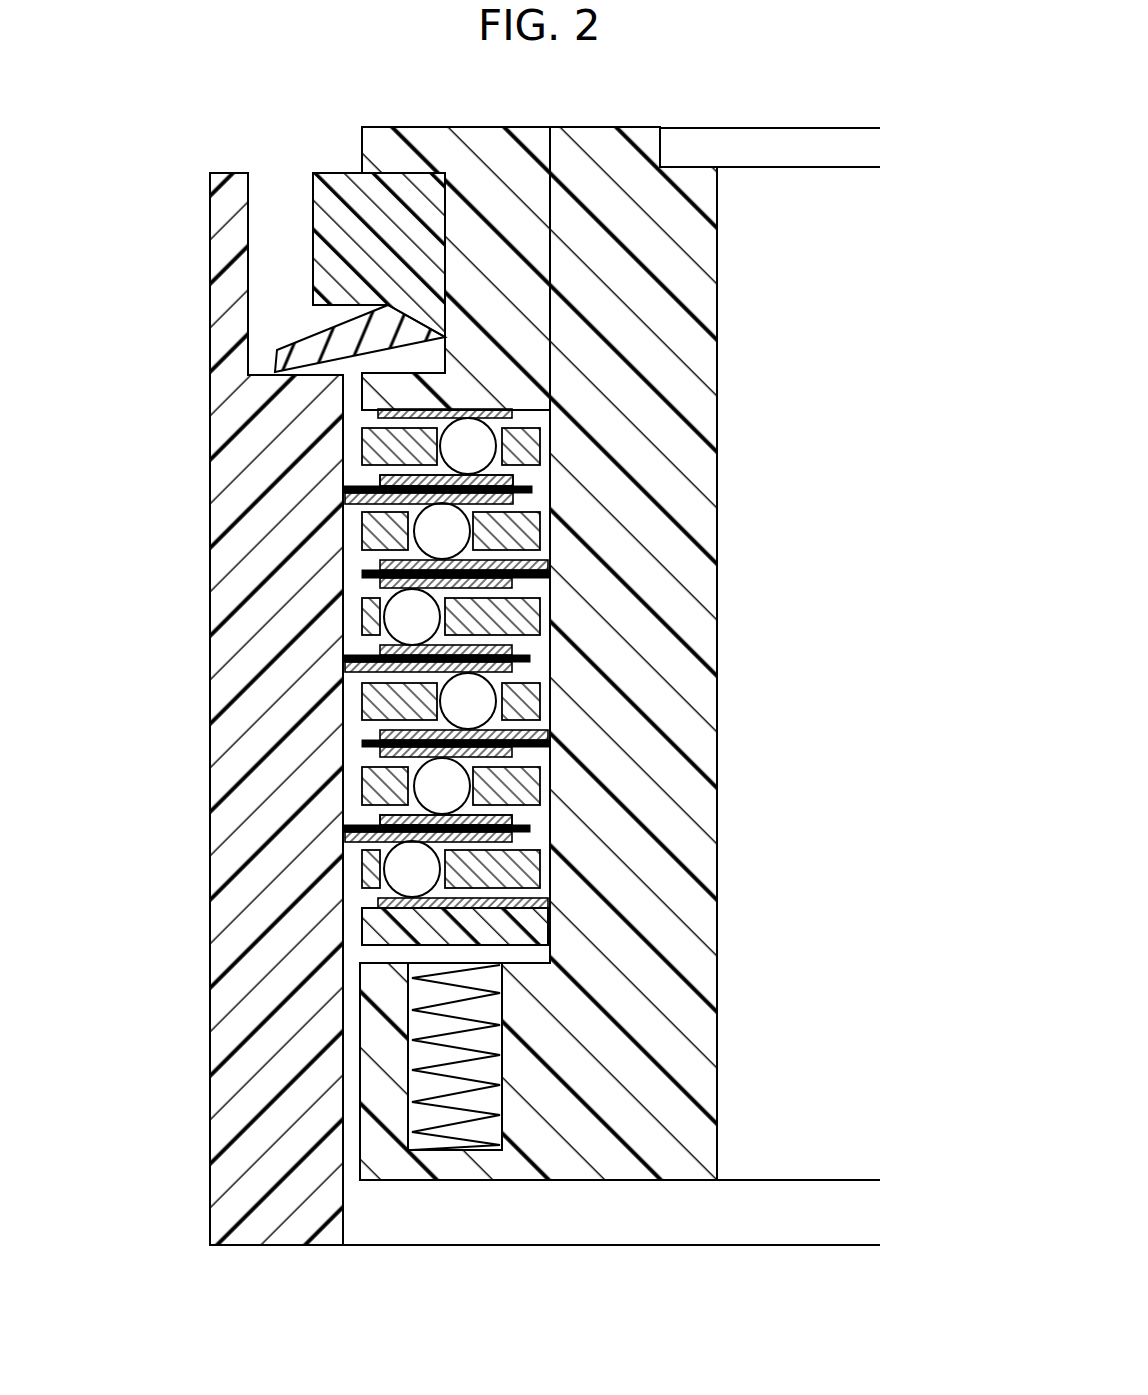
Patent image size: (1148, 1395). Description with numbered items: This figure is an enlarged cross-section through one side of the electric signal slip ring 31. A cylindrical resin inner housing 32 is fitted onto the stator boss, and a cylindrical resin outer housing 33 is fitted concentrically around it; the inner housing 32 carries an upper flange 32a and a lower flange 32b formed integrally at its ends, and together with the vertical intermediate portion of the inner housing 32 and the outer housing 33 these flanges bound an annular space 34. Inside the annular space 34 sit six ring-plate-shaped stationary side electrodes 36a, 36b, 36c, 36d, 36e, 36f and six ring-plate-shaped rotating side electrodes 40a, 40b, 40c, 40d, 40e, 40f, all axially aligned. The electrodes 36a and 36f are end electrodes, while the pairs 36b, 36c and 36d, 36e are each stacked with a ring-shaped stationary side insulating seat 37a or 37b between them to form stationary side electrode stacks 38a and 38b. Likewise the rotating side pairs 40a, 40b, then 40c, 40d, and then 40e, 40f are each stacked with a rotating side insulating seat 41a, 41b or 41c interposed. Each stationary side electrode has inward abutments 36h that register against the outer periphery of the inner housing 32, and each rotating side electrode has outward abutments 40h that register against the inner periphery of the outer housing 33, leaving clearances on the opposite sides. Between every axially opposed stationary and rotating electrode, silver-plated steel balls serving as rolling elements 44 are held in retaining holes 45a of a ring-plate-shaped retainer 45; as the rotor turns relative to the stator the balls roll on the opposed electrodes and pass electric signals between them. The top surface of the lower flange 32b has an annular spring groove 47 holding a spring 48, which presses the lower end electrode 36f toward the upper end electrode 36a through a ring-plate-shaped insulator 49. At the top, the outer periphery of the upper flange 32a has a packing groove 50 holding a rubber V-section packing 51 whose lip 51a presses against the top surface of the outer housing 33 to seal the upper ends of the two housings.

The electric signal slip ring 31 is at (305, 131).
The inner housing 32 is at (717, 645).
The upper flange 32a is at (490, 152).
The lower flange 32b is at (393, 1167).
The outer housing 33 is at (210, 533).
The annular space 34 is at (180, 662).
The stationary side electrode 36a is at (522, 438).
The stationary side electrode 36b is at (505, 522).
The stationary side electrode 36c is at (490, 605).
The stationary side electrode 36d is at (520, 700).
The stationary side electrode 36e is at (505, 786).
The stationary side electrode 36f is at (495, 868).
The abutment 36h is at (520, 565).
The stationary side insulating seat 37a is at (520, 583).
The stationary side insulating seat 37b is at (520, 752).
The stationary side electrode stack 38a is at (352, 566).
The stationary side electrode stack 38b is at (352, 738).
The rotating side electrode 40a is at (365, 445).
The rotating side electrode 40b is at (365, 525).
The rotating side electrode 40c is at (365, 615).
The rotating side electrode 40d is at (368, 697).
The rotating side electrode 40e is at (365, 785).
The rotating side electrode 40f is at (365, 868).
The abutment 40h is at (383, 480).
The rotating side insulating seat 41a is at (527, 489).
The rotating side insulating seat 41b is at (527, 658).
The rotating side insulating seat 41c is at (527, 829).
The rolling element 44 is at (490, 447).
The retainer 45 is at (500, 478).
The retaining hole 45a is at (380, 413).
The spring groove 47 is at (455, 1145).
The spring 48 is at (476, 1100).
The insulator 49 is at (365, 928).
The packing groove 50 is at (398, 185).
The packing 51 is at (313, 201).
The lip 51a is at (290, 349).